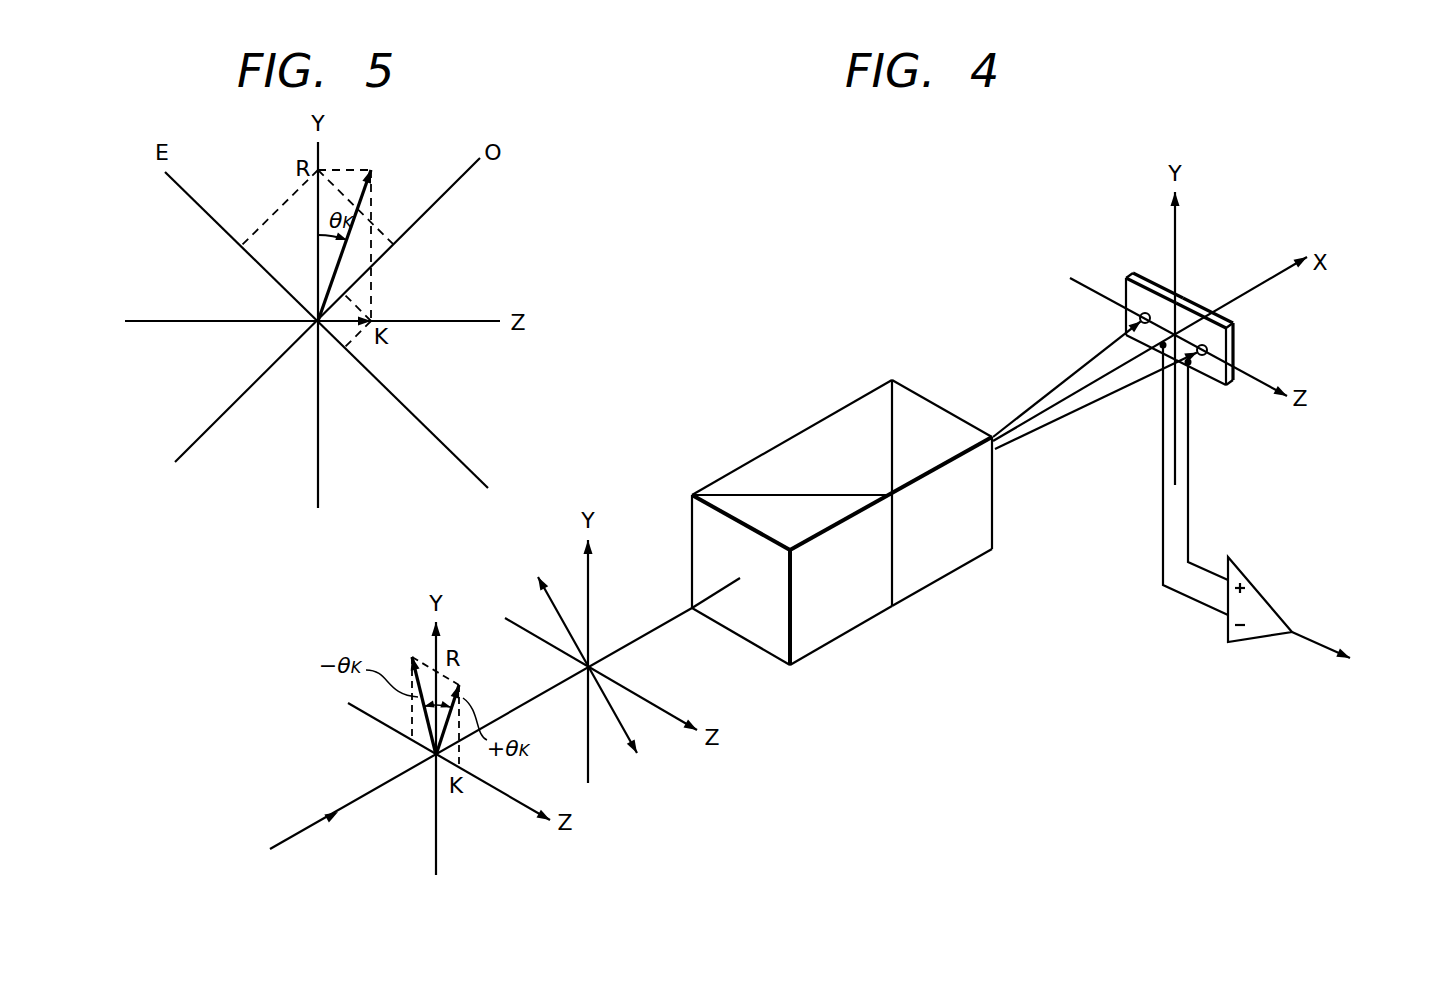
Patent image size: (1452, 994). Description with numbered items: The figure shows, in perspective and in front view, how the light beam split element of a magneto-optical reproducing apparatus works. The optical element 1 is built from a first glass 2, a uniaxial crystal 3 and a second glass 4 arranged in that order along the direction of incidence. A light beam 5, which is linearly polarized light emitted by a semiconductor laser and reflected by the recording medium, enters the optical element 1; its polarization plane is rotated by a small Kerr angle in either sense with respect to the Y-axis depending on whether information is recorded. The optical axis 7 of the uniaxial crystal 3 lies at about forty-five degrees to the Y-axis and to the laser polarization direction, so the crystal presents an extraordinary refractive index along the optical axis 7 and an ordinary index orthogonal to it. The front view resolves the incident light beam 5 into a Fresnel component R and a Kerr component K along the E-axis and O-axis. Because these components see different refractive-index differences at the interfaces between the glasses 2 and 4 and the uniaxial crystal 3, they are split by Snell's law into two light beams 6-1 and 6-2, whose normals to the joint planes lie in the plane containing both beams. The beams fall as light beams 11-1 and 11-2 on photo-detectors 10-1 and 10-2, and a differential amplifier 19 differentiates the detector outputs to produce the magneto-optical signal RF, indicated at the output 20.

The optical element 1 is at (742, 455).
The first glass 2 is at (837, 623).
The uniaxial crystal 3 is at (845, 417).
The second glass 4 is at (937, 563).
The light beam 5 is at (310, 825).
The light beam 6-1 is at (1093, 357).
The light beam 6-2 is at (1132, 381).
The optical axis 7 is at (581, 652).
The photo-detector 10-1 is at (1124, 283).
The photo-detector 10-2 is at (1235, 348).
The light beam 11-1 is at (1153, 312).
The light beam 11-2 is at (1198, 333).
The differential amplifier 19 is at (1243, 643).
The output signal 20 is at (1338, 658).